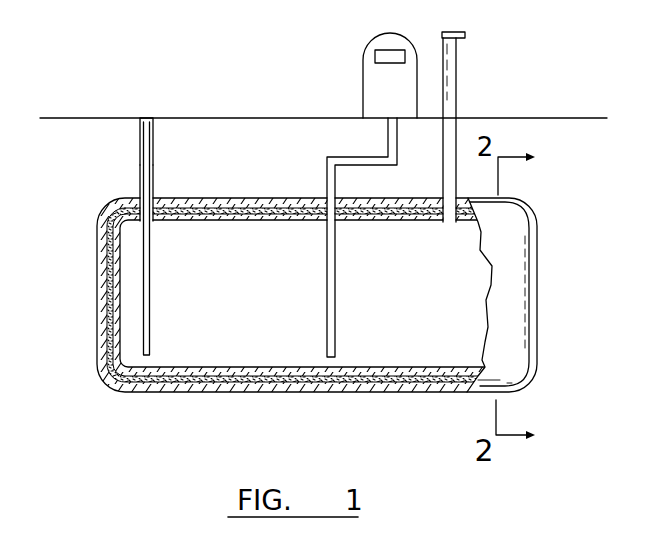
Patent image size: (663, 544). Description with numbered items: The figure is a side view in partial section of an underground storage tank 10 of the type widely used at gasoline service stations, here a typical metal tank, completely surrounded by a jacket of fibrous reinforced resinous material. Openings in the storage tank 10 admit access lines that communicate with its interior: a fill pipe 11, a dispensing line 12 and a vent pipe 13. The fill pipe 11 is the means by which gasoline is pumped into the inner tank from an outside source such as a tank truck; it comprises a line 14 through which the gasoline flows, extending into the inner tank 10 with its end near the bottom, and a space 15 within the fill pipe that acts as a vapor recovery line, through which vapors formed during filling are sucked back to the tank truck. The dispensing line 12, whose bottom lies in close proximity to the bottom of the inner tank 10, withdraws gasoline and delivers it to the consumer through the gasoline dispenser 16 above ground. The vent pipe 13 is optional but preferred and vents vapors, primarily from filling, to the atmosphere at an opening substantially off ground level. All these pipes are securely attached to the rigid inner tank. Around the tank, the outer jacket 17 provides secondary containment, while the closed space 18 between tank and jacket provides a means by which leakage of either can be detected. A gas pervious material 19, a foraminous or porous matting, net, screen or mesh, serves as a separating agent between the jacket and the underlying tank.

The storage tank 10 is at (268, 219).
The fill pipe 11 is at (154, 143).
The dispensing line 12 is at (326, 166).
The vent pipe 13 is at (457, 102).
The line 14 is at (150, 292).
The space 15 is at (140, 162).
The gasoline dispenser 16 is at (363, 85).
The outer jacket 17 is at (172, 393).
The closed space 18 is at (224, 373).
The gas pervious material 19 is at (297, 370).